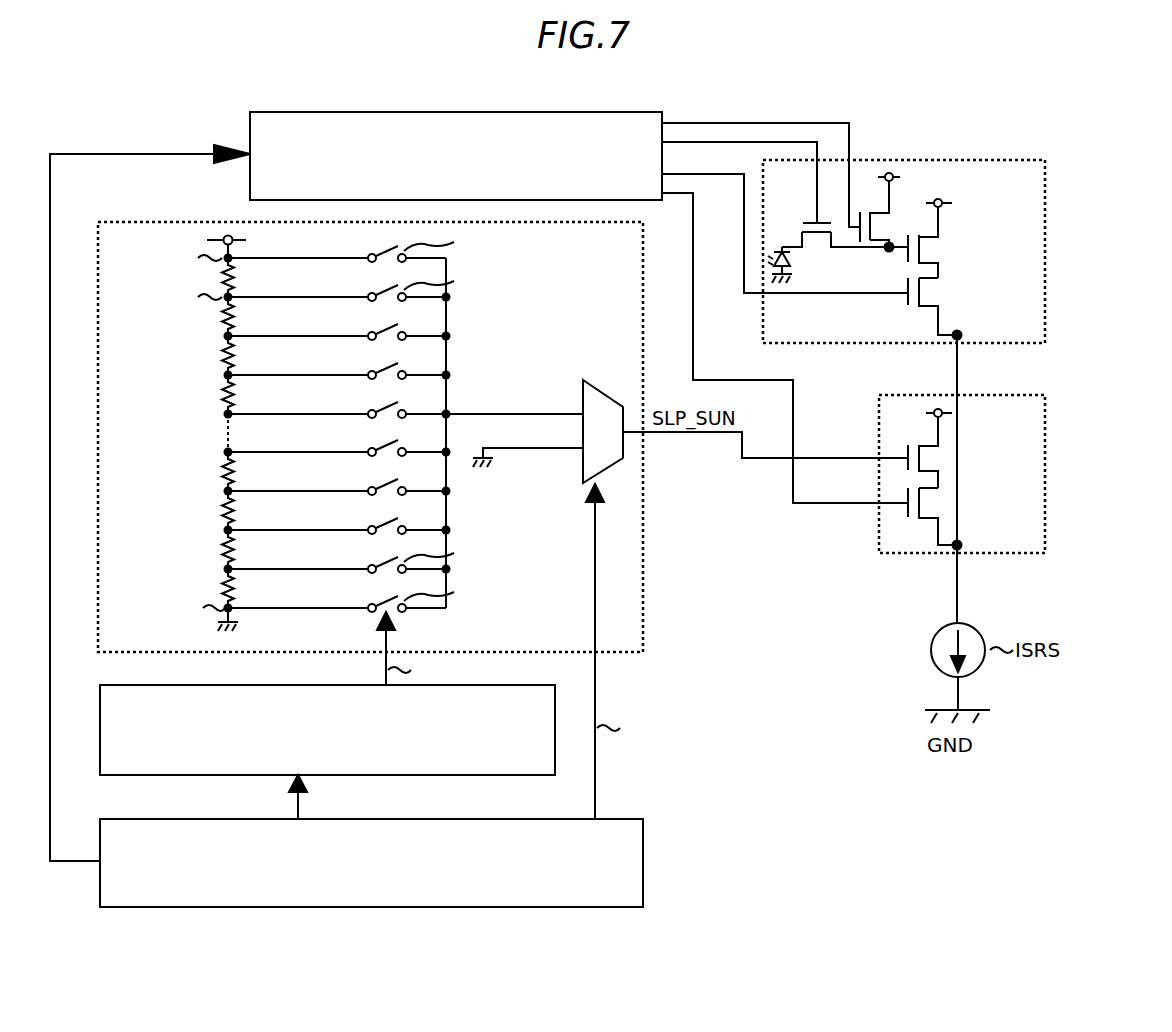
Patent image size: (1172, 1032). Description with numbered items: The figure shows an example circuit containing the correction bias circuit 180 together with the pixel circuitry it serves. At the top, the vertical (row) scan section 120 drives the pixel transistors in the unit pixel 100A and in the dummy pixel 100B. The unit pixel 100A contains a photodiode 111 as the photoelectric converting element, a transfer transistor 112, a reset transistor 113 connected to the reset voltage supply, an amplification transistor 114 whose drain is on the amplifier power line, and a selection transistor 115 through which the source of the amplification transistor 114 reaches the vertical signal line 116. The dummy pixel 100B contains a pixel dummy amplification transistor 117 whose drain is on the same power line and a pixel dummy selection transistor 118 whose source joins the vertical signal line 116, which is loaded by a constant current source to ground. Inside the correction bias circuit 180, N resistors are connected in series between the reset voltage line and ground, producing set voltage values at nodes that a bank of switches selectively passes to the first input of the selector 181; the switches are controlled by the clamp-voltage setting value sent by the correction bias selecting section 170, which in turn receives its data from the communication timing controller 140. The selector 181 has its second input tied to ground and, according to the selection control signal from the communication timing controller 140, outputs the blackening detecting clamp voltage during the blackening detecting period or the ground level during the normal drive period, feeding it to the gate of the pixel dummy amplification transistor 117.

The vertical (row) scan section 120 is at (432, 110).
The correction bias circuit 180 is at (645, 598).
The selector 181 is at (605, 386).
The correction bias selecting section 170 is at (510, 775).
The communication timing controller 140 is at (645, 857).
The unit pixel 100A is at (1047, 196).
The dummy pixel / current source pixel 100B is at (1047, 438).
The photodiode 111 is at (793, 262).
The transfer transistor 112 is at (811, 217).
The reset transistor 113 is at (877, 221).
The amplification transistor 114 is at (941, 248).
The selection transistor 115 is at (941, 291).
The vertical signal line 116 is at (959, 590).
The pixel dummy amplification transistor 117 is at (904, 450).
The pixel dummy selection transistor 118 is at (904, 510).